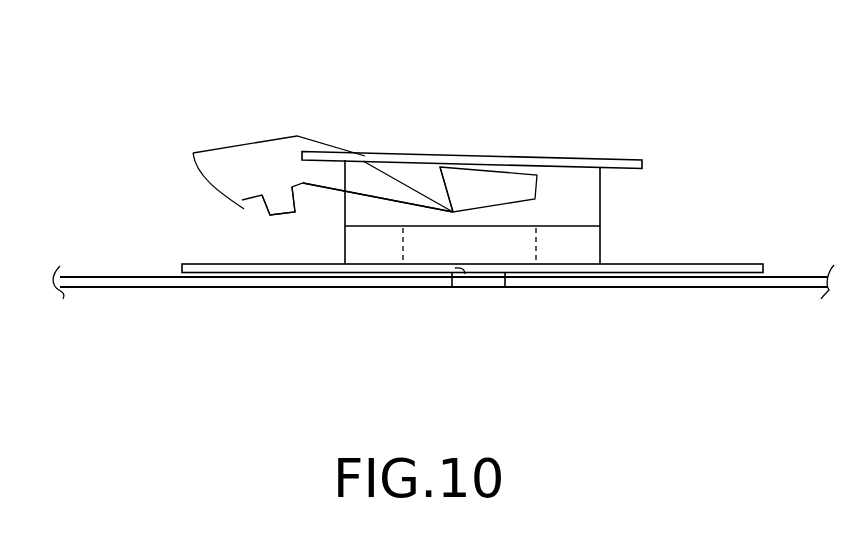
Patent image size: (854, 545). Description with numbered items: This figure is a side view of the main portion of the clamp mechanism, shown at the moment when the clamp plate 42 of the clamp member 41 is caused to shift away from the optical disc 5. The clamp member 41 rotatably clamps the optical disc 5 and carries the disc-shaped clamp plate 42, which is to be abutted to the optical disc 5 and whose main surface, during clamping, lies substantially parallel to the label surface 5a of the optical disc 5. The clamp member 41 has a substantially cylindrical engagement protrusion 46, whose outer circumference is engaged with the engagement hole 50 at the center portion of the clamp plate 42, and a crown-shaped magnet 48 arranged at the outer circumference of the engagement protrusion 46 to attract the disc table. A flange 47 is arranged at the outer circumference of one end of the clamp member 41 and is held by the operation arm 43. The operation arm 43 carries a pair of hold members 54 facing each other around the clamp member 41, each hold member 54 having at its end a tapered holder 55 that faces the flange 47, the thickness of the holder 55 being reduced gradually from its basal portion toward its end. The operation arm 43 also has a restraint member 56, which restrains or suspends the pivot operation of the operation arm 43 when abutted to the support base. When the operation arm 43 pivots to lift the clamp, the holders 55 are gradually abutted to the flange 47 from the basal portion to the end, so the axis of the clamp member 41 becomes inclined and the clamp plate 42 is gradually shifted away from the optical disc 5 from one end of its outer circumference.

The optical disc 5 is at (323, 288).
The label surface 5a is at (102, 278).
The clamp member 41 is at (588, 157).
The clamp plate 42 is at (197, 261).
The operation arm 43 is at (242, 153).
The engagement protrusion 46 is at (477, 283).
The flange 47 is at (643, 163).
The magnet 48 is at (587, 247).
The engagement hole 50 is at (462, 286).
The hold member 54 is at (390, 178).
The holder 55 is at (507, 173).
The restraint member 56 is at (280, 212).